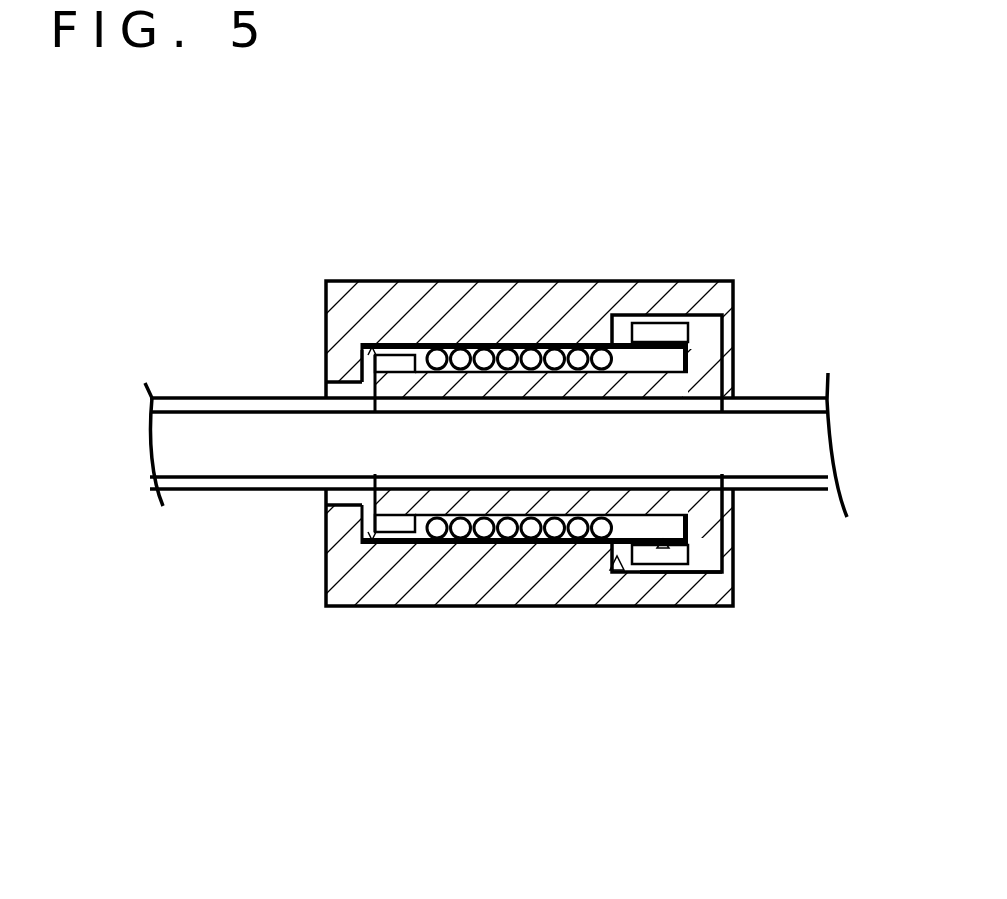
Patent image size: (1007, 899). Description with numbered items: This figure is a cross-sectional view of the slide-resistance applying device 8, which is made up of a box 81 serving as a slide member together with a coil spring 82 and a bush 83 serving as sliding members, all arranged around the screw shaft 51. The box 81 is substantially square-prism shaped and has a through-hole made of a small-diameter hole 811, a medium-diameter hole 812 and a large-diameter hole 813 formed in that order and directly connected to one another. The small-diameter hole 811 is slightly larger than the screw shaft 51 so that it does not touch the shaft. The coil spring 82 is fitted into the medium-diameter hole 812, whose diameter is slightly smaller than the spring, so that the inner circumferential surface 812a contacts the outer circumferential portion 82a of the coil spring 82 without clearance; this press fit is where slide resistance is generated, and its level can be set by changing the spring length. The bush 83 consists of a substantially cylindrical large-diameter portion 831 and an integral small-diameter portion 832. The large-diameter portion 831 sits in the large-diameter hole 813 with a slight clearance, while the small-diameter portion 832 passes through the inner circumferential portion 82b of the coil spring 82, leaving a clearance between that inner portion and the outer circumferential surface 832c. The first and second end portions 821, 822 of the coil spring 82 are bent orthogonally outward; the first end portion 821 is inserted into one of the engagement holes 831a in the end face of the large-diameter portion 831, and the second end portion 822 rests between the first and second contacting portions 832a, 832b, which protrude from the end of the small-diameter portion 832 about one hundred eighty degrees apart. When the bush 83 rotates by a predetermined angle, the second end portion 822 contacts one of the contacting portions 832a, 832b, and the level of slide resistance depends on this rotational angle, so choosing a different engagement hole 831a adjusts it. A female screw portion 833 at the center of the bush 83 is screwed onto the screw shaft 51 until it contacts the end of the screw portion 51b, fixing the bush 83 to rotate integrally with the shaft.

The slide-resistance applying device 8 is at (392, 736).
The screw shaft 51 is at (182, 453).
The screw portion 51b is at (202, 397).
The box 81 is at (489, 607).
The small-diameter hole 811 is at (326, 500).
The medium-diameter hole 812 is at (380, 533).
The inner circumferential surface 812a is at (396, 350).
The large-diameter hole 813 is at (608, 552).
The coil spring 82 is at (553, 343).
The outer circumferential portion 82a is at (503, 343).
The inner circumferential portion 82b is at (447, 343).
The first end portion 821 is at (641, 316).
The second end portion 822 is at (385, 342).
The bush 83 is at (722, 542).
The large-diameter portion 831 is at (672, 564).
The engagement hole 831a is at (686, 334).
The small-diameter portion 832 is at (524, 548).
The first contacting portion 832a is at (372, 360).
The second contacting portion 832b is at (402, 525).
The outer circumferential surface 832c is at (560, 550).
The female screw portion 833 is at (690, 402).